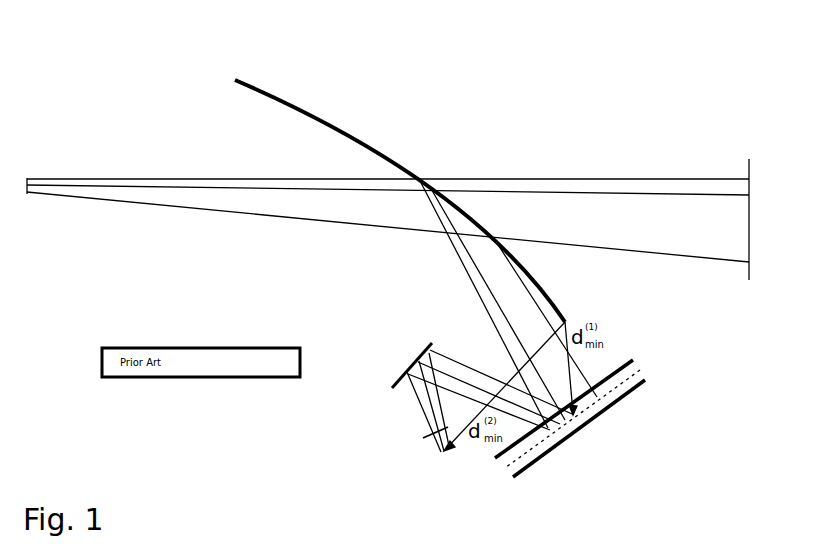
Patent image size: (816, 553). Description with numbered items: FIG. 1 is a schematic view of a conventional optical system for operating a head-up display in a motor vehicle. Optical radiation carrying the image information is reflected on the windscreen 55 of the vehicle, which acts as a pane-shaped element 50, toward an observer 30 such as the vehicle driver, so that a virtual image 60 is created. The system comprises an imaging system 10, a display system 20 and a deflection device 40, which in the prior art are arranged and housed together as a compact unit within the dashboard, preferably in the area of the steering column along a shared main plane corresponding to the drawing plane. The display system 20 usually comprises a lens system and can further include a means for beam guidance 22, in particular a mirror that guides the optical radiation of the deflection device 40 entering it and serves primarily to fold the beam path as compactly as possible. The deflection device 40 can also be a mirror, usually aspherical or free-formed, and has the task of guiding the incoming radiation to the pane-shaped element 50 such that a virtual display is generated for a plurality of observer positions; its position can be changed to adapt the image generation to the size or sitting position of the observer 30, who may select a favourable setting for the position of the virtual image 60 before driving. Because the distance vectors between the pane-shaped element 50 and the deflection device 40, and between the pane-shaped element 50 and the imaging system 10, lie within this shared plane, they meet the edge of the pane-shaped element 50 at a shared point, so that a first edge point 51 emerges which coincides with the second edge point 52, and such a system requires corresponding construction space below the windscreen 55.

The imaging system 10 is at (443, 452).
The display system 20 is at (425, 434).
The means for beam guidance 22 is at (422, 345).
The observer 30 is at (28, 195).
The deflection device 40 is at (630, 388).
The pane-shaped element 50 is at (400, 180).
The windscreen 55 is at (333, 122).
The first edge point 51 is at (602, 338).
The second edge point 52 is at (574, 316).
The virtual image 60 is at (748, 163).